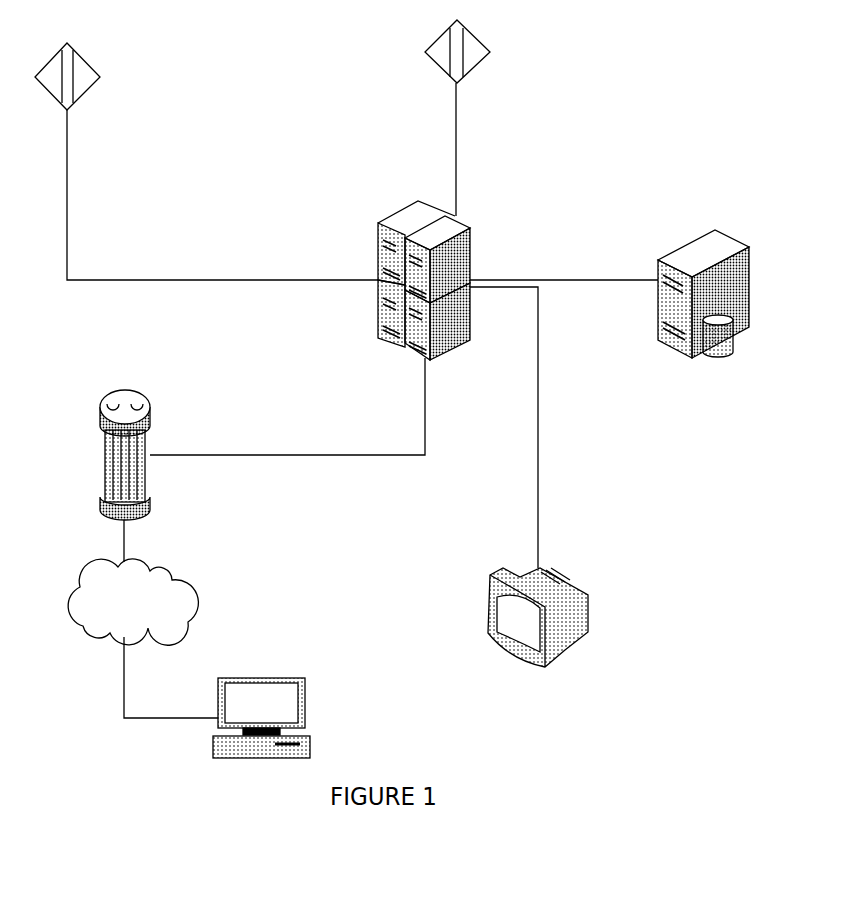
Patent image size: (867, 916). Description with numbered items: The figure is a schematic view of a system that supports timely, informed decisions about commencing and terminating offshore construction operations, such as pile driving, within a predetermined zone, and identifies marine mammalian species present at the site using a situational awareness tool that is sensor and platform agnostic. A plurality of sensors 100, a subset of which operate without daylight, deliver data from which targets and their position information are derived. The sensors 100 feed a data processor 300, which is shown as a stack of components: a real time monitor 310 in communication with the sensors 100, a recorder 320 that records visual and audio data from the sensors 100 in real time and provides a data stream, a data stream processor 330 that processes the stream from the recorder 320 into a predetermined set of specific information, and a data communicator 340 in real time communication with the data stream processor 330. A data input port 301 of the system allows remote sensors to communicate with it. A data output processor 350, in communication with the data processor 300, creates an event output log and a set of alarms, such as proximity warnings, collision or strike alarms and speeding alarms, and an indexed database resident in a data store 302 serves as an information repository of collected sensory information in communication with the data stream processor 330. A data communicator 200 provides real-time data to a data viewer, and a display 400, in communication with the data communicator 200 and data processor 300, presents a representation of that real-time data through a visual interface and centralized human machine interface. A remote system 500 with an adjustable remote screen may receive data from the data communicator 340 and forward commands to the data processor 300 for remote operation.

The sensors 100 is at (100, 77).
The data communicator 200 is at (102, 452).
The data processor 300 is at (427, 331).
The data input port 301 is at (405, 347).
The real time monitor 310 is at (378, 337).
The recorder 320 is at (378, 243).
The data stream processor 330 is at (470, 243).
The data communicator 340 is at (442, 327).
The data output processor 350 is at (700, 252).
The data store 302 is at (713, 350).
The display 400 is at (488, 575).
The remote system 500 is at (261, 726).